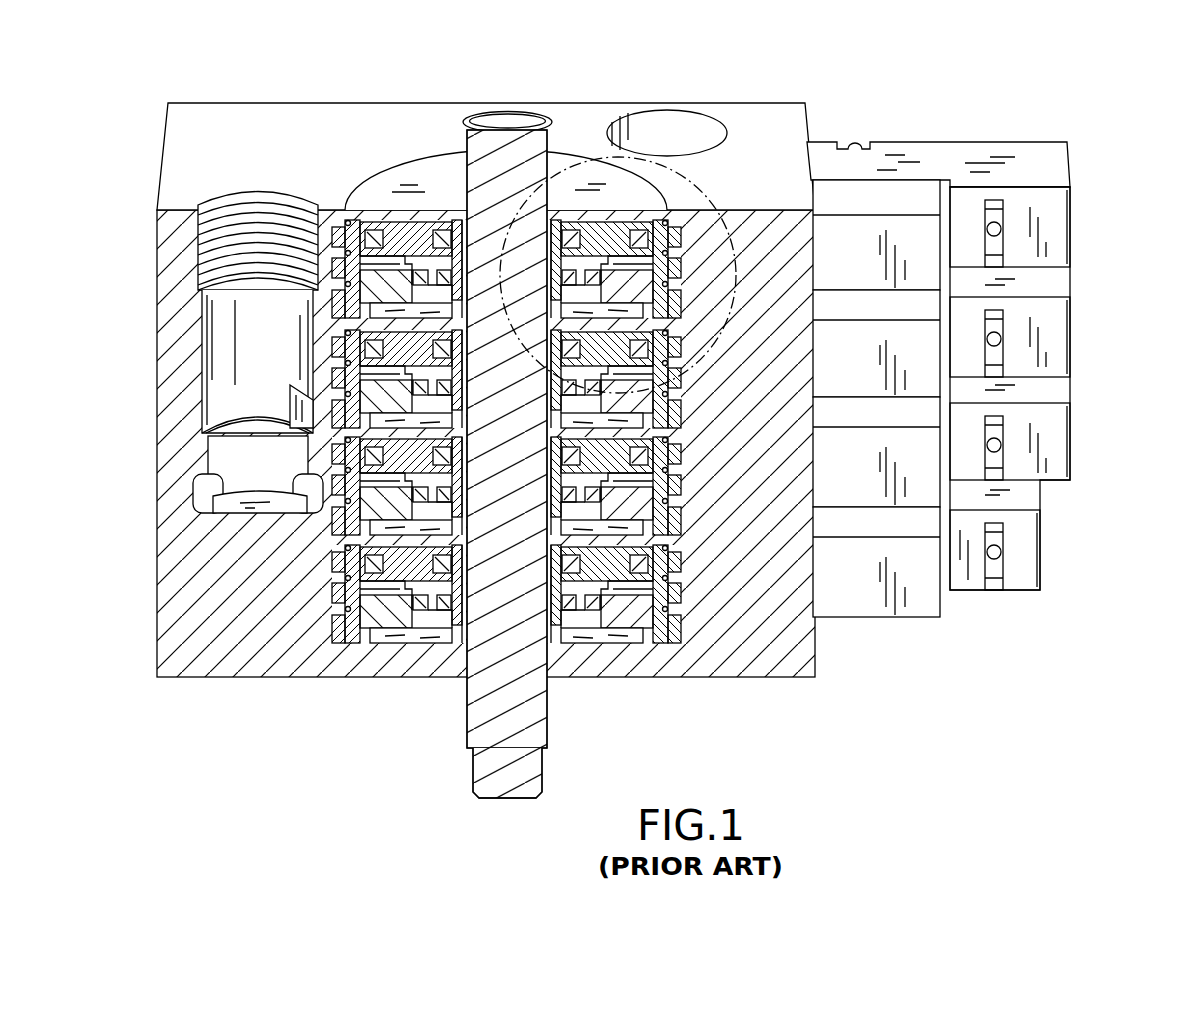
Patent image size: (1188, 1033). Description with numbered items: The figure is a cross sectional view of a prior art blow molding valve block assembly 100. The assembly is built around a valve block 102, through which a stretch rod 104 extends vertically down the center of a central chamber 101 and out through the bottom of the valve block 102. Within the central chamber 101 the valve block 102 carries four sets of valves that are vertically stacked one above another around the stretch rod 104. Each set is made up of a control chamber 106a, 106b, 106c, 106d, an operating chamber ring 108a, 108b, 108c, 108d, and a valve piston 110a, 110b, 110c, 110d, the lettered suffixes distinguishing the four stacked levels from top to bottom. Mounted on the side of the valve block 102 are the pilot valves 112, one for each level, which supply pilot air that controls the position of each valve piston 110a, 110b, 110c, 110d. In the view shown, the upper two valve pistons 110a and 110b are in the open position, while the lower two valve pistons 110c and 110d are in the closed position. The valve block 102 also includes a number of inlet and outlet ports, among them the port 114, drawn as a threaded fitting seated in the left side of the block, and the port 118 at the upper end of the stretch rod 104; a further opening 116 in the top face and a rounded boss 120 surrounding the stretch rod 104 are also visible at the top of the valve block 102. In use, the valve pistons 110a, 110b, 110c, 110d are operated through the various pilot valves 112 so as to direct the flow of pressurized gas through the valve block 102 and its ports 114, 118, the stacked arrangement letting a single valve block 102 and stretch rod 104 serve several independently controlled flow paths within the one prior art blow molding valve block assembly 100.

The prior art blow molding valve block assembly 100 is at (668, 402).
The central chamber 101 is at (390, 648).
The valve block 102 is at (242, 677).
The stretch rod 104 is at (546, 770).
The control chamber 106a is at (663, 200).
The control chamber 106b is at (683, 344).
The control chamber 106c is at (683, 451).
The control chamber 106d is at (683, 560).
The operating chamber ring 108a is at (683, 311).
The operating chamber ring 108b is at (683, 419).
The operating chamber ring 108c is at (683, 530).
The operating chamber ring 108d is at (683, 633).
The valve piston 110a is at (683, 279).
The valve piston 110b is at (683, 387).
The valve piston 110c is at (683, 499).
The valve piston 110d is at (683, 594).
The pilot valve 112 is at (1070, 150).
The inlet and outlet port 114 is at (275, 192).
The port 116 is at (728, 133).
The inlet and outlet port 118 is at (462, 123).
The boss 120 is at (599, 157).